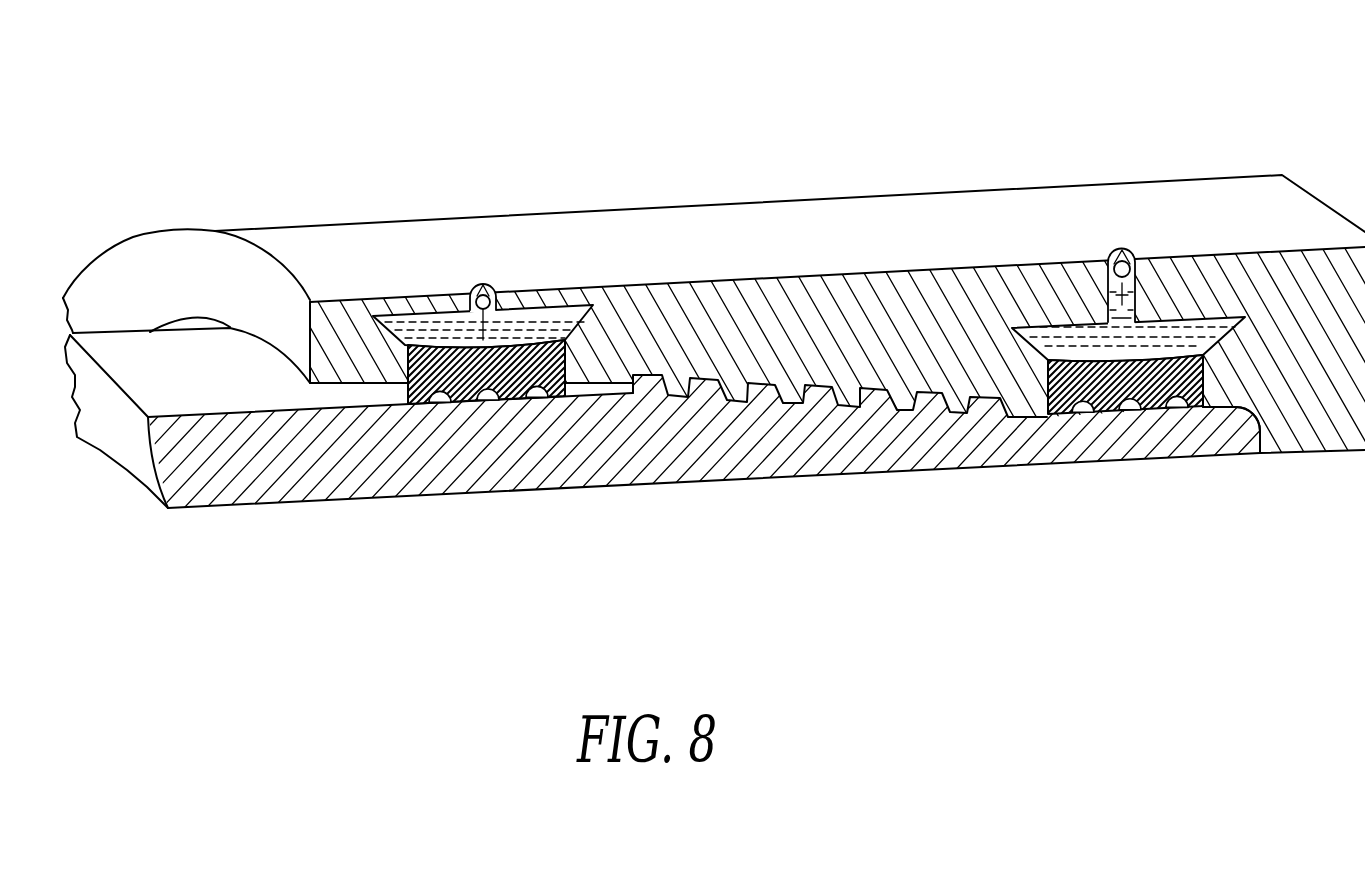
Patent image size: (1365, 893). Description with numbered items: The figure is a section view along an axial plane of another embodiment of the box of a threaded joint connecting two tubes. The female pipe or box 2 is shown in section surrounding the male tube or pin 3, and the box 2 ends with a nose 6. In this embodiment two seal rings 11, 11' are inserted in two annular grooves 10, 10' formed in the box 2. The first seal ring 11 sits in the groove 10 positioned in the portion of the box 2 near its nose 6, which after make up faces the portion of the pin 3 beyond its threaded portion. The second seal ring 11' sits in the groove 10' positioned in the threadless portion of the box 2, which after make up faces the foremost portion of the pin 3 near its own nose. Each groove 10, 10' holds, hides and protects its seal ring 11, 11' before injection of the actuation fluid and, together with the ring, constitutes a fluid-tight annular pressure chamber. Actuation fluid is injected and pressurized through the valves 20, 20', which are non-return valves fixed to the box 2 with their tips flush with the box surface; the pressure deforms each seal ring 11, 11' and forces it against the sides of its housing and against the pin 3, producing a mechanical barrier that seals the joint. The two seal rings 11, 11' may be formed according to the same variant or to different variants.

The female pipe 2 is at (915, 297).
The male tube 3 is at (817, 448).
The nose 6 is at (215, 270).
The annular groove 10 is at (531, 241).
The seal ring 11 is at (483, 481).
The valve 20 is at (555, 203).
The annular groove 10' is at (1153, 274).
The seal ring 11' is at (1122, 481).
The valve 20' is at (1196, 182).